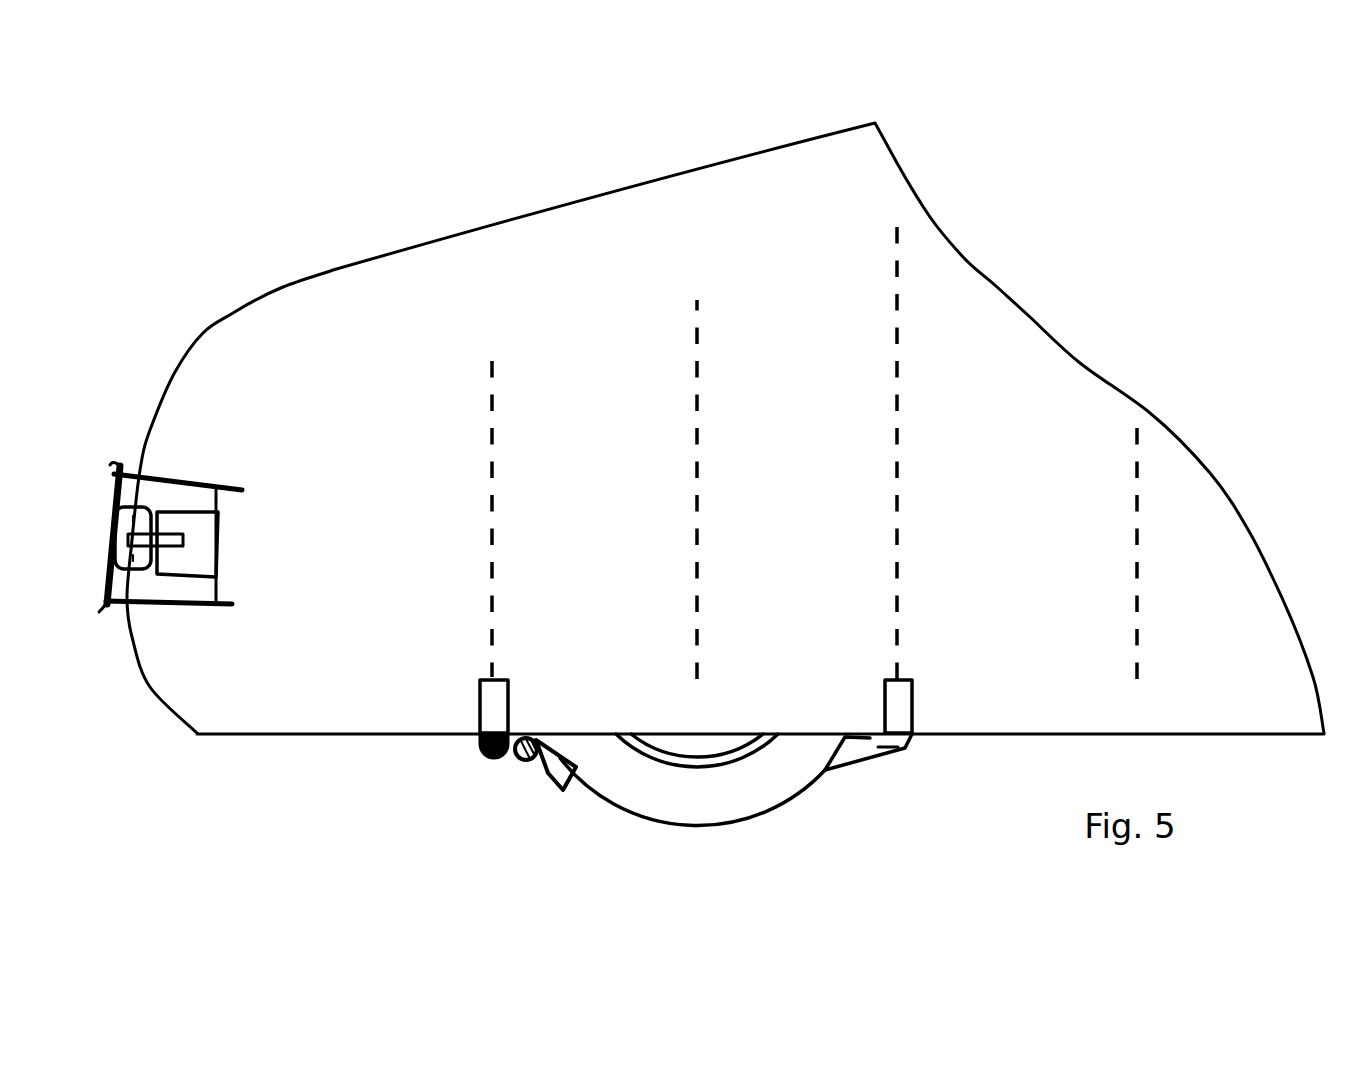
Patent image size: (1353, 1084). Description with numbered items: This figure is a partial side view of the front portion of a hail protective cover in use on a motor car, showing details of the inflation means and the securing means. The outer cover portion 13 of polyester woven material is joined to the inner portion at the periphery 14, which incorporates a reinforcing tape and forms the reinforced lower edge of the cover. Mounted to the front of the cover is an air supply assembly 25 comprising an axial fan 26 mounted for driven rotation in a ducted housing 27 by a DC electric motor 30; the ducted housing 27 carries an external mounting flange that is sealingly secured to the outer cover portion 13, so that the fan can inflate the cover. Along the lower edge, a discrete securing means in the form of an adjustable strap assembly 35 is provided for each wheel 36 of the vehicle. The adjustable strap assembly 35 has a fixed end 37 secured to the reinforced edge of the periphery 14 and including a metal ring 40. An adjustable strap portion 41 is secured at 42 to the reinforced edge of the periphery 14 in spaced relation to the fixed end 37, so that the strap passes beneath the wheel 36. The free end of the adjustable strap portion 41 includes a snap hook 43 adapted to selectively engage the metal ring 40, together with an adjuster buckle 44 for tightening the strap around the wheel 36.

The outer cover portion 13 is at (528, 268).
The periphery 14 is at (318, 740).
The air supply assembly 25 is at (97, 490).
The axial fan 26 is at (142, 498).
The ducted housing 27 is at (182, 604).
The DC electric motor 30 is at (203, 530).
The adjustable strap assembly 35 is at (868, 780).
The wheel 36 is at (698, 790).
The fixed end 37 is at (487, 712).
The metal ring 40 is at (489, 753).
The adjustable strap portion 41 is at (903, 749).
The securing point 42 is at (900, 700).
The snap hook 43 is at (510, 728).
The adjuster buckle 44 is at (523, 770).